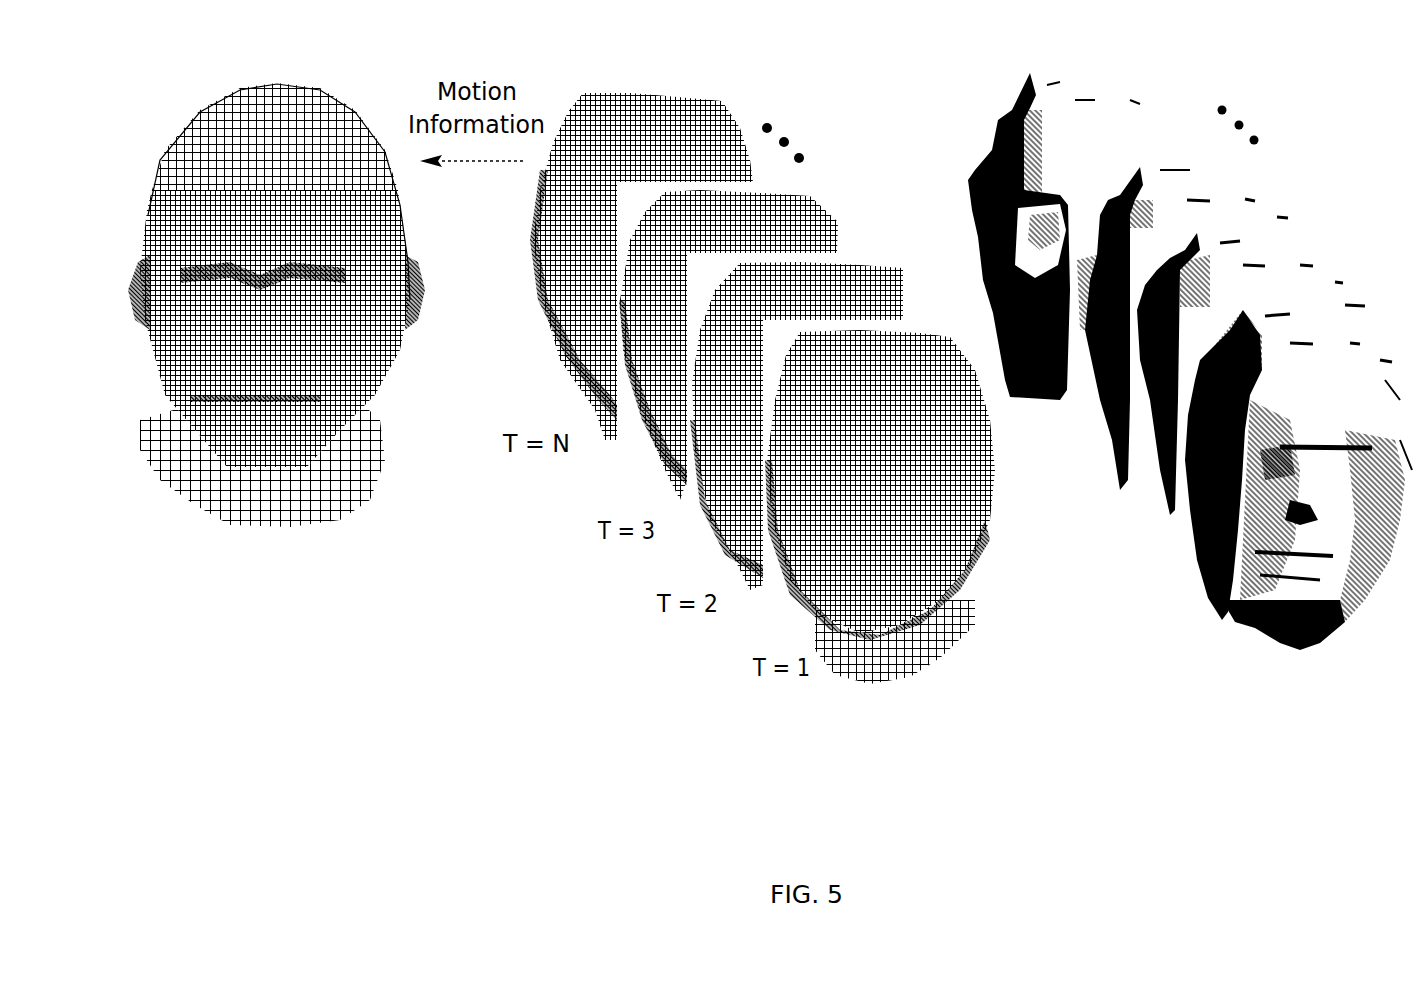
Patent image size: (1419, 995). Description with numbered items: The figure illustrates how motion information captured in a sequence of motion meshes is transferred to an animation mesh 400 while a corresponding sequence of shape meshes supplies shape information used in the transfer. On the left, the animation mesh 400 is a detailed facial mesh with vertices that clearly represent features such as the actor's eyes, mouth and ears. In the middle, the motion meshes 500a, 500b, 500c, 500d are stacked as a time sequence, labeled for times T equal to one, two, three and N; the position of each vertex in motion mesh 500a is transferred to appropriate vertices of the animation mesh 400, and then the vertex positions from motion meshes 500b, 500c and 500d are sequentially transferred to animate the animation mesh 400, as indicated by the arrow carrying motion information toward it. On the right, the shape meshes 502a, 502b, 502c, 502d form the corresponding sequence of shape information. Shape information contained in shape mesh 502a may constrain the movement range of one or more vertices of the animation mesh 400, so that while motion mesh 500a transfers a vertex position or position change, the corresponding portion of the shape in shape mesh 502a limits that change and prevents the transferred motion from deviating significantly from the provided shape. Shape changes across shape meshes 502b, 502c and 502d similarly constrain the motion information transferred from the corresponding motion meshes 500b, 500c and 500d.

The animation mesh 400 is at (185, 512).
The motion mesh 500a is at (947, 315).
The motion mesh 500b is at (893, 249).
The motion mesh 500c is at (815, 224).
The motion mesh 500d is at (737, 81).
The shape mesh 502a is at (1230, 623).
The shape mesh 502b is at (1163, 480).
The shape mesh 502c is at (1113, 423).
The shape mesh 502d is at (1080, 74).